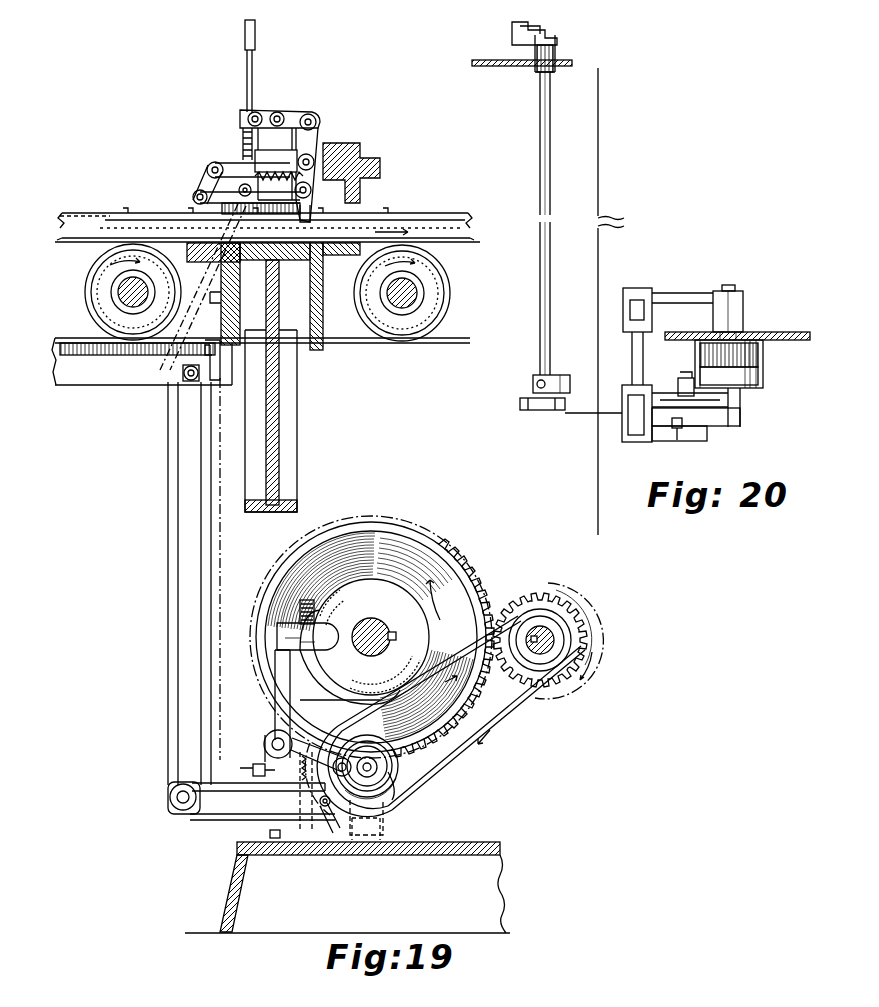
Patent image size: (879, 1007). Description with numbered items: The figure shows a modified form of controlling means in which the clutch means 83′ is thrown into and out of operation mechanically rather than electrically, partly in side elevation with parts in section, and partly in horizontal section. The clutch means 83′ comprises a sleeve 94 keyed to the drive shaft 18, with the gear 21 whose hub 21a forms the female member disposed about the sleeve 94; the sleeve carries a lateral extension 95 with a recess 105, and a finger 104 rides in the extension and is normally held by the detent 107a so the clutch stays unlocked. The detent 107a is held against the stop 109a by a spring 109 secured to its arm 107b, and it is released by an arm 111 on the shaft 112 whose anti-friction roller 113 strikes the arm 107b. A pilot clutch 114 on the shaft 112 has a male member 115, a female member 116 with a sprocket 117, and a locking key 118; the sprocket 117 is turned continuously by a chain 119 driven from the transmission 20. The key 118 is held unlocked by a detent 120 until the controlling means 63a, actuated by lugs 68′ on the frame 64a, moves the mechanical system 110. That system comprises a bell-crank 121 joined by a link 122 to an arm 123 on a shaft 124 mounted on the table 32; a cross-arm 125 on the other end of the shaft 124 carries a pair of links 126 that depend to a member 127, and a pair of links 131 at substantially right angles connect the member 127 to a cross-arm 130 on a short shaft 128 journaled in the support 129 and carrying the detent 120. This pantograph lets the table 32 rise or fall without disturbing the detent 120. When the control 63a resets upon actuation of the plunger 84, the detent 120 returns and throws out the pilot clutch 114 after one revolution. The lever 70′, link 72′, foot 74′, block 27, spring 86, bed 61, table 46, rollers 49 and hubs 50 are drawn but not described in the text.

In FIG. 19, the plunger 84 is at (252, 68).
In FIG. 19, the spring 86 is at (243, 112).
In FIG. 19, the lever 70′ is at (290, 116).
In FIG. 19, the link 72′ is at (318, 140).
In FIG. 19, the foot 74′ is at (310, 216).
In FIG. 19, the block 27 is at (350, 143).
In FIG. 19, the controlling means 63a is at (232, 158).
In FIG. 19, the bell-crank 121 is at (207, 172).
In FIG. 19, the link 122 is at (210, 330).
In FIG. 20, the link 122 is at (540, 28).
In FIG. 19, the bed plate 61 is at (451, 209).
In FIG. 19, the frame 64a is at (152, 226).
In FIG. 19, the lugs 68′ is at (135, 212).
In FIG. 19, the table 46 is at (60, 242).
In FIG. 20, the table 46 is at (475, 250).
In FIG. 19, the roller 49 is at (100, 275).
In FIG. 19, the roller hub 50 is at (118, 292).
In FIG. 19, the table 32 is at (323, 316).
In FIG. 19, the transmission 20 is at (120, 367).
In FIG. 19, the arm 123 is at (178, 368).
In FIG. 20, the arm 123 is at (530, 50).
In FIG. 19, the mechanical system 110 is at (160, 426).
In FIG. 19, the cross-arm 125 is at (187, 382).
In FIG. 20, the cross-arm 125 is at (533, 386).
In FIG. 19, the shaft 124 is at (206, 390).
In FIG. 20, the shaft 124 is at (540, 157).
In FIG. 19, the links 126 is at (170, 543).
In FIG. 20, the links 126 is at (520, 405).
In FIG. 19, the gear 21 is at (427, 548).
In FIG. 19, the clutch means 83′ is at (396, 576).
In FIG. 19, the sleeve 94 is at (394, 609).
In FIG. 19, the hub 21a is at (430, 608).
In FIG. 19, the drive shaft 18 is at (381, 629).
In FIG. 19, the recess 105 is at (300, 606).
In FIG. 19, the lateral extension 95 is at (300, 618).
In FIG. 19, the finger 104 is at (282, 640).
In FIG. 19, the detent 107a is at (275, 670).
In FIG. 20, the detent 107a is at (630, 318).
In FIG. 19, the arm 107b is at (268, 738).
In FIG. 20, the arm 107b is at (660, 442).
In FIG. 19, the pilot clutch 114 is at (380, 700).
In FIG. 20, the pilot clutch 114 is at (764, 385).
In FIG. 19, the anti-friction roller 113 is at (300, 742).
In FIG. 20, the anti-friction roller 113 is at (707, 440).
In FIG. 19, the arm 111 is at (348, 760).
In FIG. 20, the arm 111 is at (740, 420).
In FIG. 19, the chain 119 is at (490, 714).
In FIG. 20, the chain 119 is at (816, 333).
In FIG. 19, the male member 115 is at (398, 765).
In FIG. 20, the male member 115 is at (752, 392).
In FIG. 19, the stop 109a is at (255, 767).
In FIG. 19, the sprocket 117 is at (395, 773).
In FIG. 20, the sprocket 117 is at (786, 333).
In FIG. 19, the female member 116 is at (385, 773).
In FIG. 20, the female member 116 is at (762, 368).
In FIG. 19, the member 127 is at (170, 808).
In FIG. 19, the links 131 is at (252, 814).
In FIG. 20, the links 131 is at (578, 416).
In FIG. 19, the shaft 112 is at (373, 775).
In FIG. 20, the shaft 112 is at (733, 291).
In FIG. 19, the locking key 118 is at (372, 800).
In FIG. 19, the spring 109 is at (292, 826).
In FIG. 19, the short shaft 128 is at (322, 808).
In FIG. 20, the short shaft 128 is at (685, 372).
In FIG. 19, the detent 120 is at (345, 852).
In FIG. 20, the detent 120 is at (684, 374).
In FIG. 19, the support 129 is at (385, 834).
In FIG. 20, the support 129 is at (691, 296).
In FIG. 19, the cross-arm 130 is at (350, 800).
In FIG. 20, the cross-arm 130 is at (680, 430).